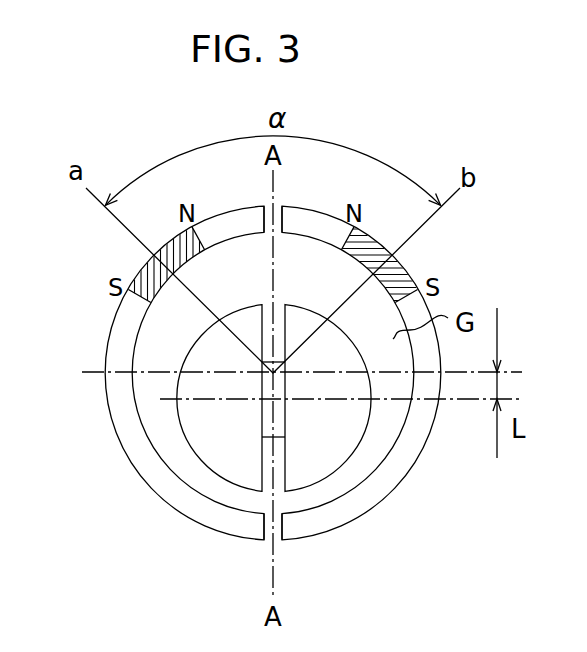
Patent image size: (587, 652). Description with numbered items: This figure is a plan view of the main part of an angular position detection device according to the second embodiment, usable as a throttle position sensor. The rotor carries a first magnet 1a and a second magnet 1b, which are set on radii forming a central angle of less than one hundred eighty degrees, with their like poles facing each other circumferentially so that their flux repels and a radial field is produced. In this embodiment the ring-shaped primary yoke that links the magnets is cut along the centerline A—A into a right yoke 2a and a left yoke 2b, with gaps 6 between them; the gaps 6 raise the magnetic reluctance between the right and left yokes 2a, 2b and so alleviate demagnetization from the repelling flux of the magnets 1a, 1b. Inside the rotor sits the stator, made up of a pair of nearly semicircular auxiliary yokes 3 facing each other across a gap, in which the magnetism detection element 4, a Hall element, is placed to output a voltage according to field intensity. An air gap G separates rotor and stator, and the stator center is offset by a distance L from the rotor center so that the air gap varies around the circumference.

The first magnet 1a is at (148, 262).
The second magnet 1b is at (400, 260).
The right yoke 2a is at (392, 474).
The left yoke 2b is at (160, 472).
The auxiliary yokes 3 is at (262, 489).
The magnetism detection element 4 is at (285, 420).
The gaps 6 is at (281, 208).